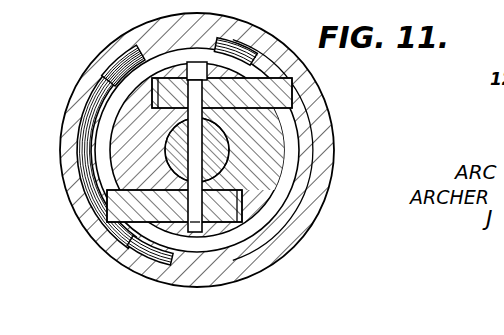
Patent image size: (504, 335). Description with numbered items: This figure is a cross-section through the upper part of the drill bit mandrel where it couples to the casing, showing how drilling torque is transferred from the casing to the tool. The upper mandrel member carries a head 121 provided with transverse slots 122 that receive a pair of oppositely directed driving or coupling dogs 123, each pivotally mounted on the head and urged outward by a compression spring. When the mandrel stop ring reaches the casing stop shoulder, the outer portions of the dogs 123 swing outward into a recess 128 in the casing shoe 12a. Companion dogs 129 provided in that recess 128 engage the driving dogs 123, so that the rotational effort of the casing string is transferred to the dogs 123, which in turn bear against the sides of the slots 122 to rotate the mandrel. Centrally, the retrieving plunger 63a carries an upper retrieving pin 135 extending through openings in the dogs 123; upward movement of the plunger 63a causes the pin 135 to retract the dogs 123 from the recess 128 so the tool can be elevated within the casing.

The casing shoe 12a is at (302, 231).
The head 121 is at (118, 137).
The slots 122 is at (150, 97).
The driving or coupling dogs 123 is at (280, 91).
The recess 128 is at (128, 63).
The companion dogs 129 is at (238, 45).
The retrieving plunger 63a is at (222, 143).
The upper retrieving pin 135 is at (200, 172).